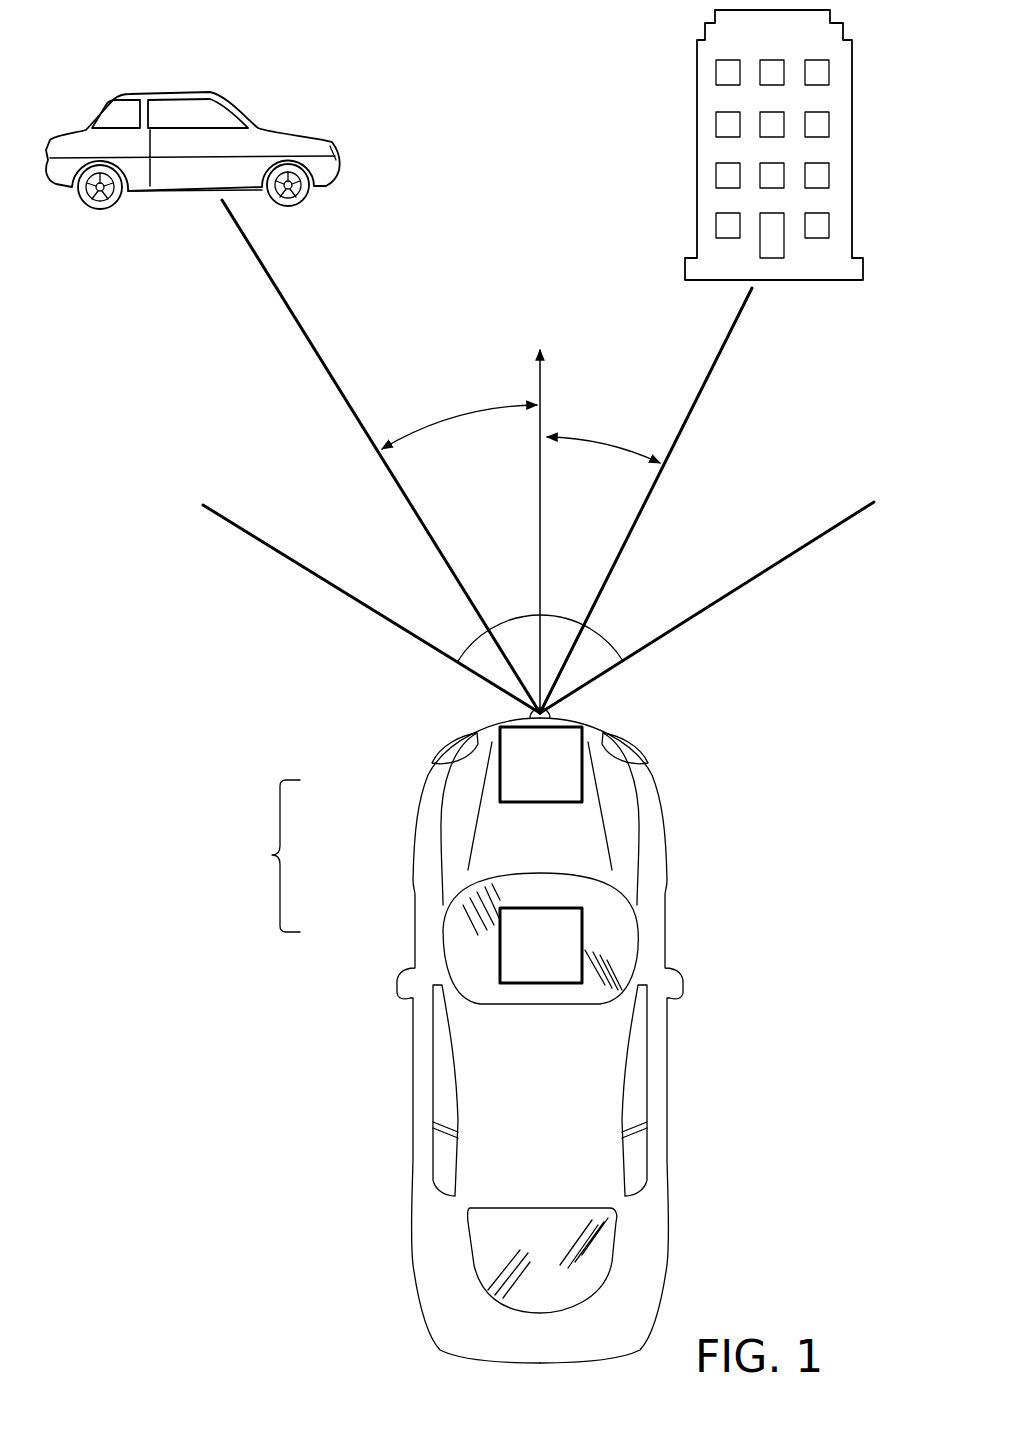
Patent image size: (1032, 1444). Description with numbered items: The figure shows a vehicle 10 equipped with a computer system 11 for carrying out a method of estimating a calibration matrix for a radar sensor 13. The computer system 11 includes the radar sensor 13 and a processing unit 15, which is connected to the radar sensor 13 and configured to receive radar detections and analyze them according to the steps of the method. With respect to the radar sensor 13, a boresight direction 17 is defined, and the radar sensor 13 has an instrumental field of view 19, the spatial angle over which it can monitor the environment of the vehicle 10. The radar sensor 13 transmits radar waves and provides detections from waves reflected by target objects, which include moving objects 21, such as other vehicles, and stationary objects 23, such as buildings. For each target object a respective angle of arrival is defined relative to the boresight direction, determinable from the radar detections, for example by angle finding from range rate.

The vehicle 10 is at (443, 1212).
The computer system 11 is at (272, 855).
The radar sensor 13 is at (507, 758).
The processing unit 15 is at (507, 952).
The boresight direction 17 is at (546, 324).
The instrumental field of view 19 is at (632, 618).
The moving object 21 is at (282, 128).
The stationary object 23 is at (853, 98).